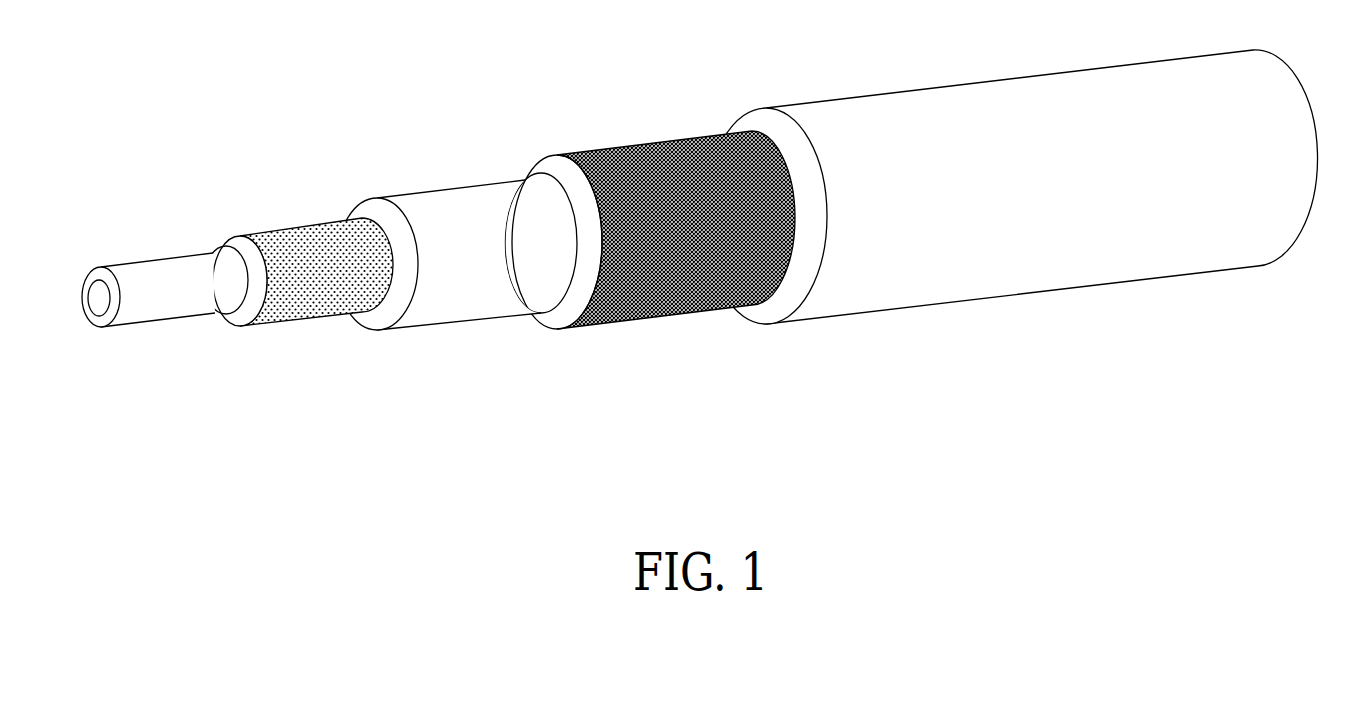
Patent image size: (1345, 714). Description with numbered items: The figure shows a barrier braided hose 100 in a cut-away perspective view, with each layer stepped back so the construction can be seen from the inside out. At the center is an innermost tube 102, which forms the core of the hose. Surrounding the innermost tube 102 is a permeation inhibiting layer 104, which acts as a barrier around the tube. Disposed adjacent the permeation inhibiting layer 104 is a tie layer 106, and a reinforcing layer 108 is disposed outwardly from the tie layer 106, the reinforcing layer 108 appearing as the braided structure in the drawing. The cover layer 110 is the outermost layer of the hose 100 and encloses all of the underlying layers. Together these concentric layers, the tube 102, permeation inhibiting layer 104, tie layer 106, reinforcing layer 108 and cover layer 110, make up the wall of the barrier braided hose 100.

The barrier braided hose 100 is at (700, 211).
The innermost tube 102 is at (158, 261).
The permeation inhibiting layer 104 is at (290, 232).
The tie layer 106 is at (458, 320).
The reinforcing layer 108 is at (633, 145).
The cover layer 110 is at (1002, 297).